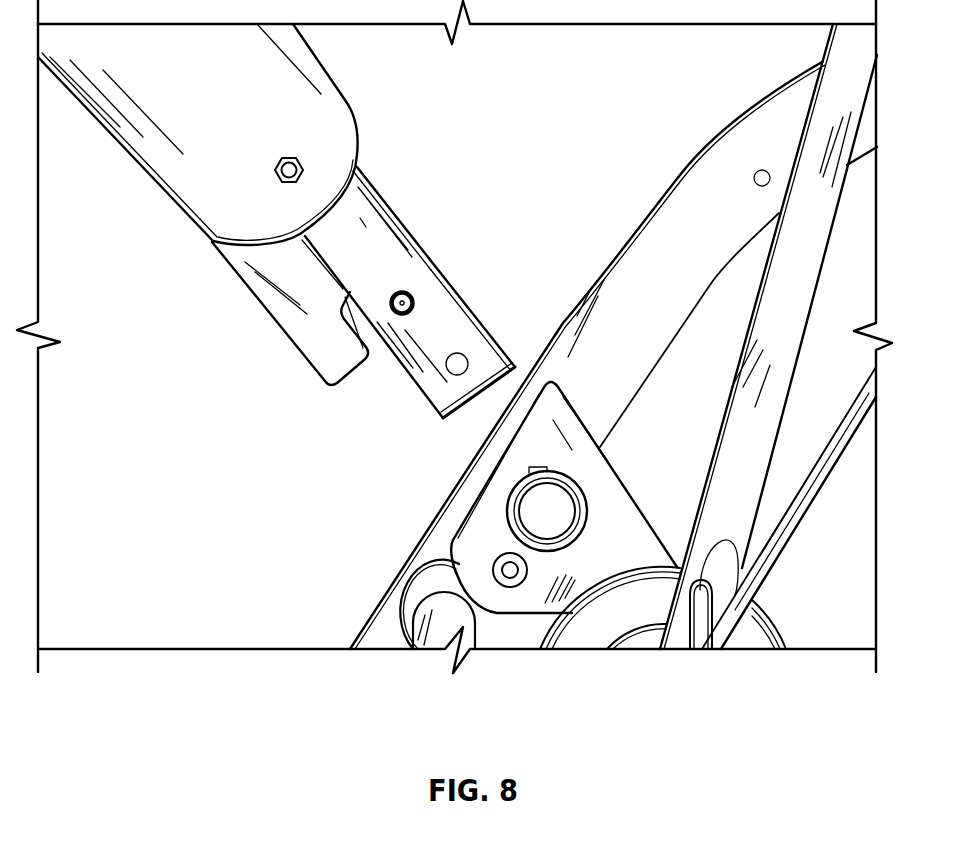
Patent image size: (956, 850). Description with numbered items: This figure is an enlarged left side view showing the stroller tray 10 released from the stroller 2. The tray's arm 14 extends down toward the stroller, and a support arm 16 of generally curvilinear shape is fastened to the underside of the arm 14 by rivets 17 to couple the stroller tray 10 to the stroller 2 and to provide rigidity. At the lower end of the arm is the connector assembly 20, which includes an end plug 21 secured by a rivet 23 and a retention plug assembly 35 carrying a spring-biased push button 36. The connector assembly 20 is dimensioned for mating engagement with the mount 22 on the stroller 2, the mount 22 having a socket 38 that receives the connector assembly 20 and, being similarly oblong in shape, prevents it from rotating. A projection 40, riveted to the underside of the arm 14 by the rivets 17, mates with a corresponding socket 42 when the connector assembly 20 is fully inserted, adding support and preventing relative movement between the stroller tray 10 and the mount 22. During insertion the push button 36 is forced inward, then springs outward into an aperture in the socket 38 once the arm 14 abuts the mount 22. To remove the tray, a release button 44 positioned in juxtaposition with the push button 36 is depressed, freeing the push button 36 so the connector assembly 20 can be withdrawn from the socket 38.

The stroller 2 is at (656, 213).
The stroller tray 10 is at (452, 115).
The arm 14 is at (152, 163).
The support arm 16 is at (380, 238).
The rivets 17 is at (290, 157).
The connector assembly 20 is at (450, 329).
The end plug 21 is at (443, 419).
The rivet 23 is at (446, 364).
The retention plug assembly 35 is at (428, 302).
The push button 36 is at (412, 294).
The socket 38 is at (500, 467).
The projection 40 is at (318, 338).
The socket 42 is at (467, 513).
The release button 44 is at (557, 527).
The mount 22 is at (600, 477).